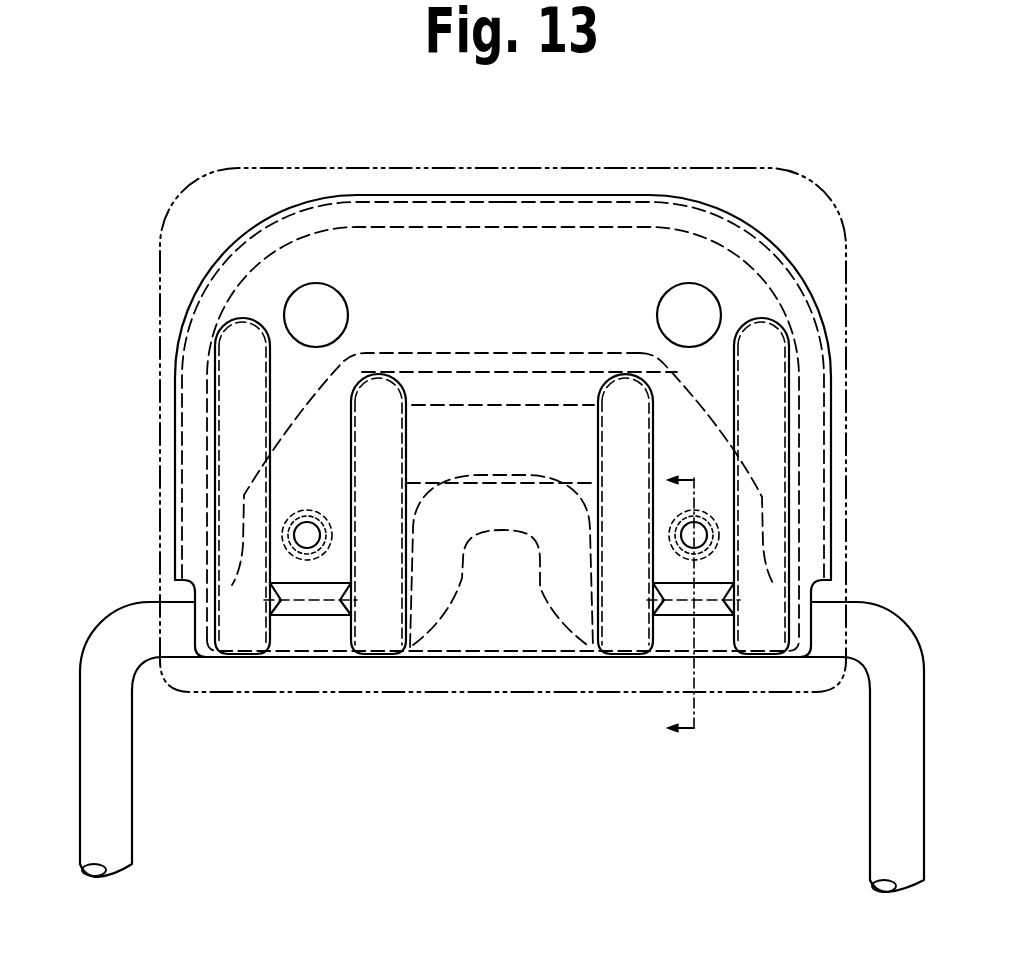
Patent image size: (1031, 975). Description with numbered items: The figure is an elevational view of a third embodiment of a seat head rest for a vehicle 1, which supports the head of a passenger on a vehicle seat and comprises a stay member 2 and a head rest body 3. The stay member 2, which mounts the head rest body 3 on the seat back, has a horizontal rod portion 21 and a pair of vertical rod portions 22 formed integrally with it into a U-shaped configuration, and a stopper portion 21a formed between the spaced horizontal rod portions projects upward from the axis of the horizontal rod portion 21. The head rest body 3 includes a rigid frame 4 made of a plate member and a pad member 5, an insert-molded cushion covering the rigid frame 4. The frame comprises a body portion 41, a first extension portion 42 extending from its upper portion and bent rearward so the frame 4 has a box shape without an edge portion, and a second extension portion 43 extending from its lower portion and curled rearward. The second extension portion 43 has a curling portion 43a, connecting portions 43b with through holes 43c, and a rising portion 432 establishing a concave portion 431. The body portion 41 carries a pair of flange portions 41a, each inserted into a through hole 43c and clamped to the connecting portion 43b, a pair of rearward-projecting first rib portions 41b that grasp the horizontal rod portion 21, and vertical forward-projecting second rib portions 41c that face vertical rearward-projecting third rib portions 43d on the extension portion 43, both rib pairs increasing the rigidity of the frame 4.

The seat head rest for a vehicle 1 is at (178, 173).
The stay member 2 is at (920, 625).
The horizontal rod portion 21 is at (822, 643).
The stopper portion 21a is at (503, 520).
The vertical rod portions 22 is at (118, 807).
The head rest body 3 is at (832, 173).
The rigid frame 4 is at (294, 191).
The body portion 41 is at (658, 263).
The flange portions 41a is at (267, 558).
The first rib portions 41b is at (300, 608).
The second rib portions 41c is at (232, 345).
The first extension portion 42 is at (812, 370).
The second extension portion 43 is at (290, 411).
The curling portion 43a is at (322, 640).
The connecting portion 43b is at (697, 421).
The through hole 43c is at (295, 527).
The third rib portions 43d is at (382, 397).
The concave portion 431 is at (485, 418).
The rising portion 432 is at (572, 410).
The pad member 5 is at (533, 167).